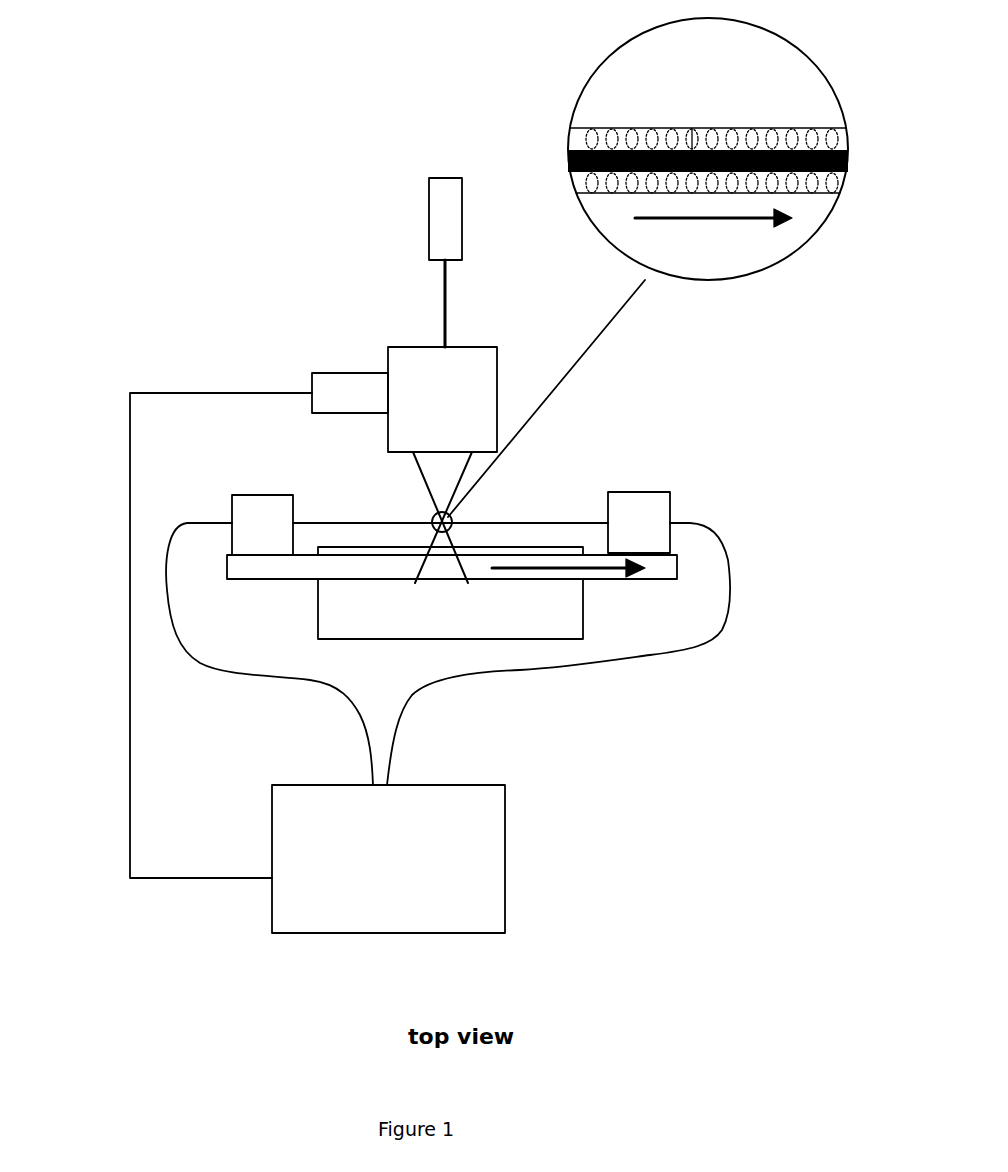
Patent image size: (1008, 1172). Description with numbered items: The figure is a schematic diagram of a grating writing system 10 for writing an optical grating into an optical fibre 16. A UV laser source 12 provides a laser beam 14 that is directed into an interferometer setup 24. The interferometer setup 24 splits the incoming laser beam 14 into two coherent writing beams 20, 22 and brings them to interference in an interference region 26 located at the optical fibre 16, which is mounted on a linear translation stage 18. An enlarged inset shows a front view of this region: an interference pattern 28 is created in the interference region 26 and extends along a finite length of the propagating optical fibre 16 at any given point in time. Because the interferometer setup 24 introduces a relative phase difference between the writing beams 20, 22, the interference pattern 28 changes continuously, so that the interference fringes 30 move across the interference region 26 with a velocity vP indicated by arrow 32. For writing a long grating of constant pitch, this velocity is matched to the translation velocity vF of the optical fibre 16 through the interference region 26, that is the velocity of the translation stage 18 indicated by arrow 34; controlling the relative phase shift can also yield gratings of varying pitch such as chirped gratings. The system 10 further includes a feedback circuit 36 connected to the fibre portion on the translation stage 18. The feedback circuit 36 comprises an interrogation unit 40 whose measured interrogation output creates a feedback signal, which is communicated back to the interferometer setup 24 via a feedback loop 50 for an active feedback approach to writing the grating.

The grating writing system 10 is at (236, 226).
The UV laser source 12 is at (462, 220).
The laser beam 14 is at (445, 300).
The optical fibre 16 is at (848, 173).
The linear translation stage 18 is at (292, 596).
The writing beam 20 is at (428, 490).
The writing beam 22 is at (465, 470).
The interferometer setup 24 is at (386, 352).
The interference region 26 is at (572, 113).
The interference pattern 28 is at (720, 108).
The interference fringe 30 is at (690, 130).
The arrow 32 is at (757, 222).
The arrow 34 is at (598, 579).
The feedback circuit 36 is at (186, 908).
The interrogation unit 40 is at (355, 933).
The feedback loop 50 is at (130, 752).